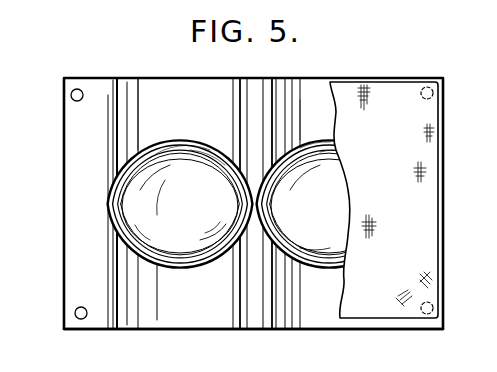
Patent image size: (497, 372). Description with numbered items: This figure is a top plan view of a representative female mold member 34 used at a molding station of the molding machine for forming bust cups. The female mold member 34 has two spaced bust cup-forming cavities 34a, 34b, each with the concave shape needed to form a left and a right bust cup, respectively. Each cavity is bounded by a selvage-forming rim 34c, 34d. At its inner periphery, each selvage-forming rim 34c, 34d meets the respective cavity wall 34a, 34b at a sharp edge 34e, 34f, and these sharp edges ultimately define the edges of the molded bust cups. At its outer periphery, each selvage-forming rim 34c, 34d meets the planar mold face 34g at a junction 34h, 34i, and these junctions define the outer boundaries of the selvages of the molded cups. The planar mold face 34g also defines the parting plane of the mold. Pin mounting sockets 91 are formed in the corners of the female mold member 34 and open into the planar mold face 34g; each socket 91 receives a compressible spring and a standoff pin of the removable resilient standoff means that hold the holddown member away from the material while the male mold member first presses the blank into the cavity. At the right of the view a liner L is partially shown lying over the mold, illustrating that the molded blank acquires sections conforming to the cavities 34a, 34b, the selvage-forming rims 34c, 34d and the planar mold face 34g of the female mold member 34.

The female mold member 34 is at (136, 79).
The bust cup-forming cavity 34a is at (185, 234).
The bust cup-forming cavity 34b is at (331, 218).
The selvage-forming rim 34c is at (181, 139).
The selvage-forming rim 34d is at (322, 139).
The sharp edge 34e is at (203, 149).
The sharp edge 34f is at (333, 152).
The planar mold face 34g is at (211, 320).
The junction 34h is at (152, 147).
The junction 34i is at (304, 138).
The pin mounting socket 91 is at (71, 98).
The liner L is at (423, 152).